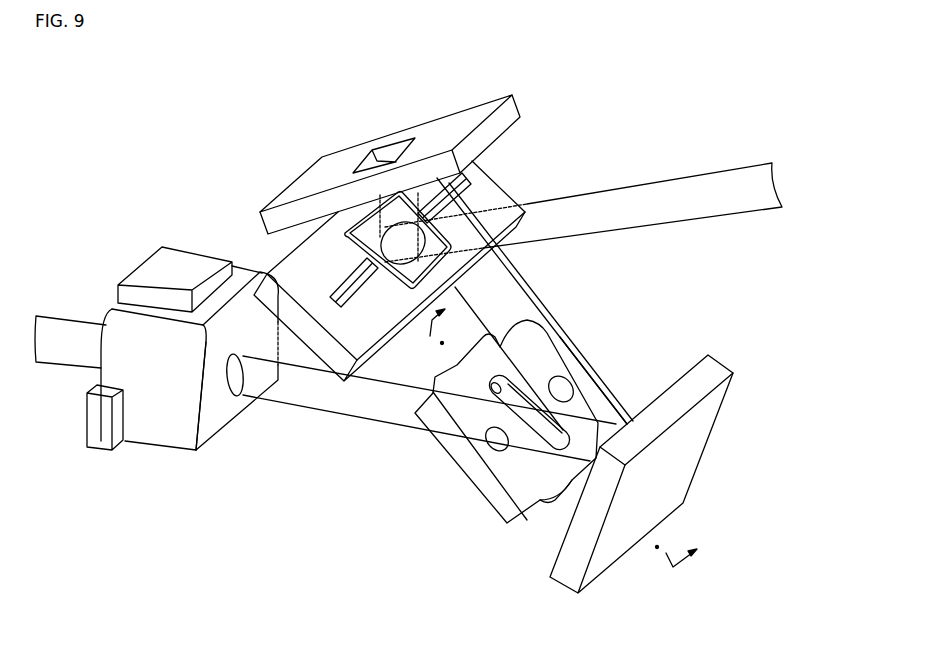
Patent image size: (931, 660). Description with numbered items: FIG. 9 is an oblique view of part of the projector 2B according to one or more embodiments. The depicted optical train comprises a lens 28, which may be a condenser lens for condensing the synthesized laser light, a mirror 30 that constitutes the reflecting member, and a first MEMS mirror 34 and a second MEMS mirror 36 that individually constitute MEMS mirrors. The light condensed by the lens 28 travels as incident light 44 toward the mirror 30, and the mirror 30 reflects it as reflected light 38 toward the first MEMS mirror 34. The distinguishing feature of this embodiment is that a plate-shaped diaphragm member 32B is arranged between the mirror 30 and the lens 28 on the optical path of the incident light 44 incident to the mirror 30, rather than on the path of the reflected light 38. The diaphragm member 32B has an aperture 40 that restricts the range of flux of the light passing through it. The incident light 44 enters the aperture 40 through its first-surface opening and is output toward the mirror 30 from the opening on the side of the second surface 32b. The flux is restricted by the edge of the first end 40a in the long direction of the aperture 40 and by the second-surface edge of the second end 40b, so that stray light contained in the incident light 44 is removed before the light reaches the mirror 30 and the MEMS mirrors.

The projector 2B is at (650, 104).
The lens 28 is at (162, 430).
The mirror 30 is at (608, 550).
The diaphragm member 32B is at (500, 449).
The second surface 32b is at (598, 378).
The first MEMS mirror 34 is at (452, 127).
The second MEMS mirror 36 is at (495, 187).
The reflected light 38 is at (508, 285).
The aperture 40 is at (520, 370).
The first end 40a is at (452, 462).
The second end 40b is at (537, 508).
The incident light 44 is at (328, 405).